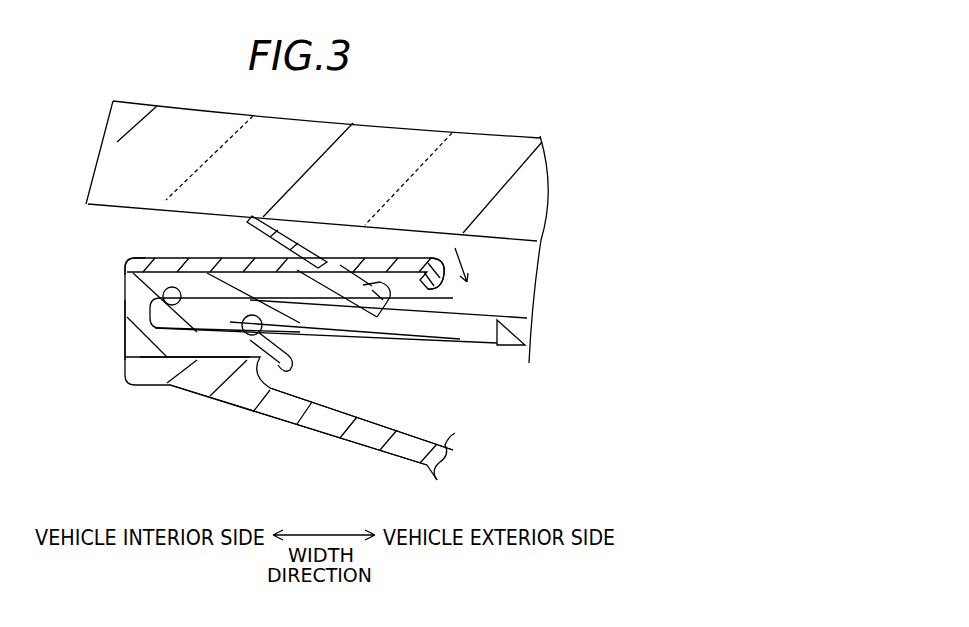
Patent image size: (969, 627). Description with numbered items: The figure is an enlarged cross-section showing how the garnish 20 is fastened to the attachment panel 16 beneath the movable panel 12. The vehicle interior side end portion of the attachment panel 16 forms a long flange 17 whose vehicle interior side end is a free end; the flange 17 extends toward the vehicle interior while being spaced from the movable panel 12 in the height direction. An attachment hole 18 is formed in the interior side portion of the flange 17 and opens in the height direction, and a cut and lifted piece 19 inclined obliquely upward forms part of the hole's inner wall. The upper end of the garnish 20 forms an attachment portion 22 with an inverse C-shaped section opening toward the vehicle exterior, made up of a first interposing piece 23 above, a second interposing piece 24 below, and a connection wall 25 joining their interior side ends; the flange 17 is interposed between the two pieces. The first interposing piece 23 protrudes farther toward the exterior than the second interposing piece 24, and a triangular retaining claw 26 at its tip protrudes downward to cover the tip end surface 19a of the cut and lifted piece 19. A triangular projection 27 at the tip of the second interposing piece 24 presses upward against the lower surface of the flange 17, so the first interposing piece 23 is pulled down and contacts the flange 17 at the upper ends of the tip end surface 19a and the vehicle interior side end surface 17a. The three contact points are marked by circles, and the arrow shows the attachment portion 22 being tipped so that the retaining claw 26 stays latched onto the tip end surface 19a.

The movable panel 12 is at (493, 152).
The attachment panel 16 is at (290, 369).
The flange 17 is at (345, 369).
The vehicle interior side end surface 17a is at (128, 270).
The attachment hole 18 is at (483, 332).
The cut and lifted piece 19 is at (330, 258).
The tip end surface 19a is at (387, 307).
The garnish 20 is at (307, 427).
The attachment portion 22 is at (122, 297).
The first interposing piece 23 is at (219, 278).
The second interposing piece 24 is at (203, 355).
The connection wall 25 is at (127, 340).
The retaining claw 26 is at (430, 290).
The projection 27 is at (247, 314).